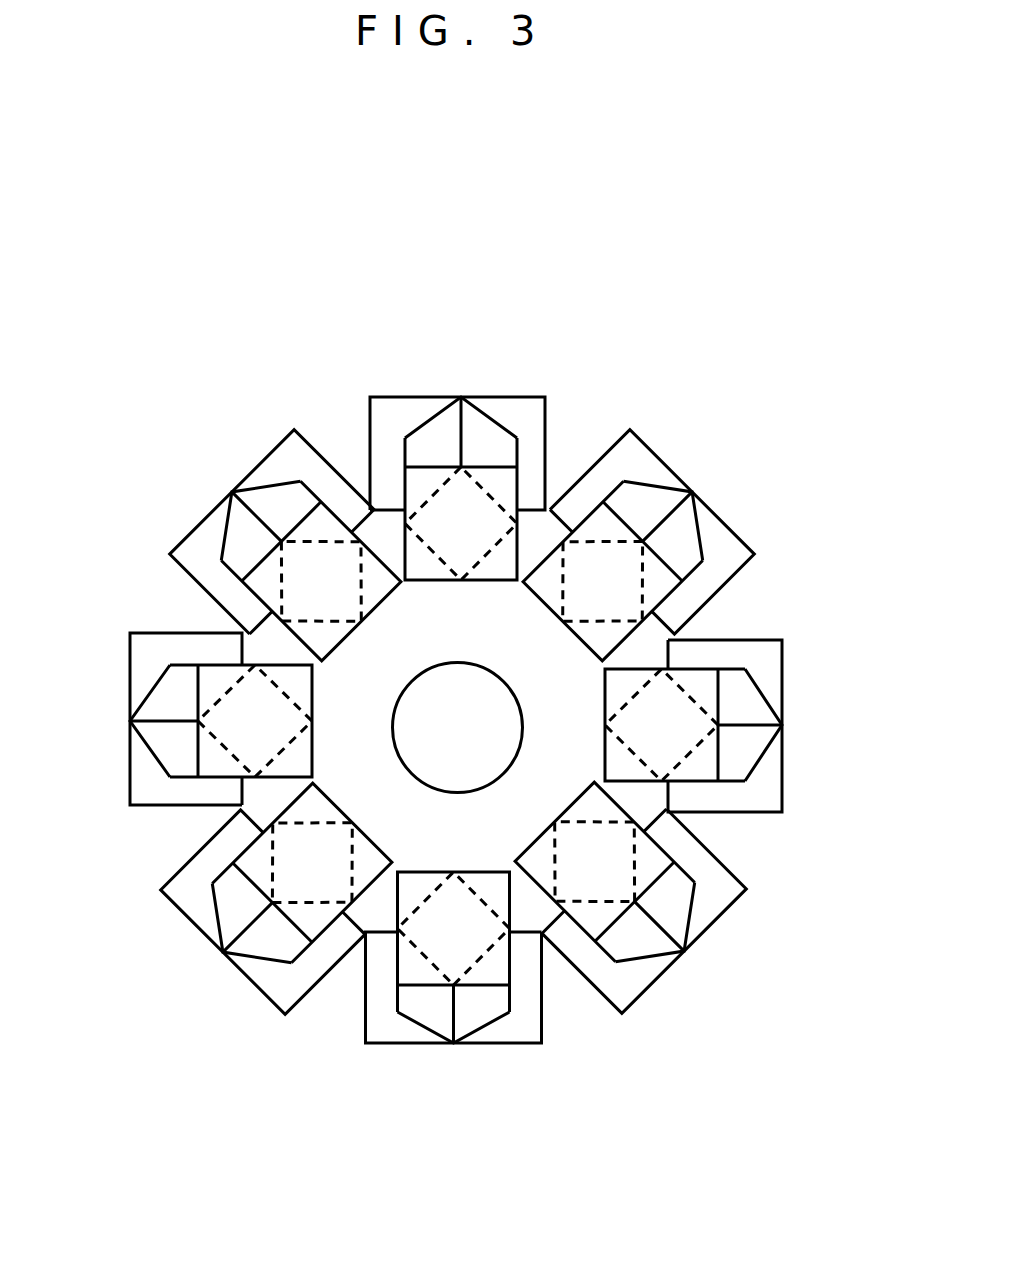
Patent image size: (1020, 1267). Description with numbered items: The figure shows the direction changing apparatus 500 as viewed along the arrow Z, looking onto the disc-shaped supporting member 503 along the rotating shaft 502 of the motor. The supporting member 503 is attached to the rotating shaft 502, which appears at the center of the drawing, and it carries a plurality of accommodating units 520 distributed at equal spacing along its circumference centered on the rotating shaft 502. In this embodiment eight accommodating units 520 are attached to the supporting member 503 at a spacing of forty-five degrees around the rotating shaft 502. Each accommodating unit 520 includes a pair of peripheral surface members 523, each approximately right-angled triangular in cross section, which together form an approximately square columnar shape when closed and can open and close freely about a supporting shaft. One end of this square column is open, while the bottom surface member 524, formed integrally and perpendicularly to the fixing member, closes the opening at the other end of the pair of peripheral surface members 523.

The direction changing apparatus 500 is at (92, 353).
The rotating shaft 502 is at (473, 700).
The supporting member 503 is at (408, 845).
The accommodating unit 520 is at (467, 396).
The peripheral surface member 523 is at (445, 436).
The bottom surface member 524 is at (418, 478).